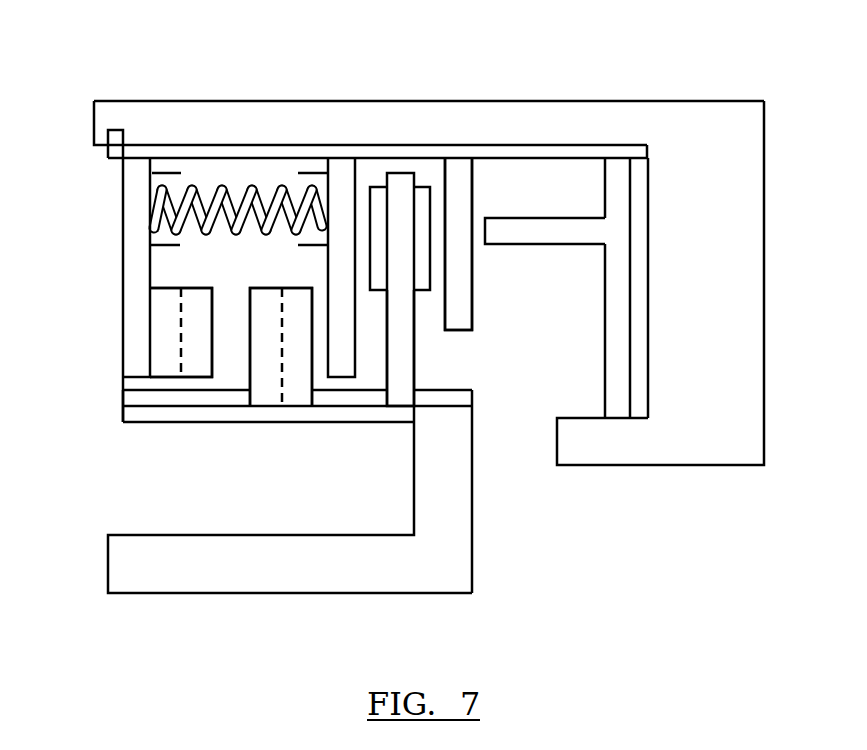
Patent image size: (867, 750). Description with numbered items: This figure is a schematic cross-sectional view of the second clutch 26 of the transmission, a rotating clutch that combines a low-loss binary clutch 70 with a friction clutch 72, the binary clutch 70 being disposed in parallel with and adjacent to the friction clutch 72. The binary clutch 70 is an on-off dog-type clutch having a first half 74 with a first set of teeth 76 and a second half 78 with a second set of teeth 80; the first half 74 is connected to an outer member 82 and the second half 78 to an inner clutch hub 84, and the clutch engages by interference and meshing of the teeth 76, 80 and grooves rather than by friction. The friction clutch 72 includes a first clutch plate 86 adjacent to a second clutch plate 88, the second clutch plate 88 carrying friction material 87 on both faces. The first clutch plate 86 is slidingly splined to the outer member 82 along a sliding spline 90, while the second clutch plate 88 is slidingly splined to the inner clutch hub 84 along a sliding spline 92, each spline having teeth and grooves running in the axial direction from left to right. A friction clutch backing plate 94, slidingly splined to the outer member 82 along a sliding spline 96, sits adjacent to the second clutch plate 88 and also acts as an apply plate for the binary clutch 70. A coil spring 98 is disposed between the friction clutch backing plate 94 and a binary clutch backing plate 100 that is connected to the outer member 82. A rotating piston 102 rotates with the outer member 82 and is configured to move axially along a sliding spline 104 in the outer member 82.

The second clutch 26 is at (706, 71).
The low-loss binary clutch 70 is at (225, 284).
The friction clutch 72 is at (433, 344).
The first half 74 is at (150, 315).
The first set of teeth 76 is at (207, 327).
The second half 78 is at (267, 285).
The second set of teeth 80 is at (267, 388).
The outer member 82 is at (372, 128).
The inner clutch hub 84 is at (172, 422).
The first clutch plate 86 is at (461, 182).
The friction material 87 is at (379, 190).
The second clutch plate 88 is at (402, 190).
The sliding spline 90 is at (457, 158).
The sliding spline 92 is at (386, 380).
The friction clutch backing plate 94 is at (343, 158).
The sliding spline 96 is at (338, 185).
The spring 98 is at (222, 184).
The binary clutch backing plate 100 is at (132, 237).
The rotating piston 102 is at (525, 244).
The sliding spline 104 is at (621, 157).